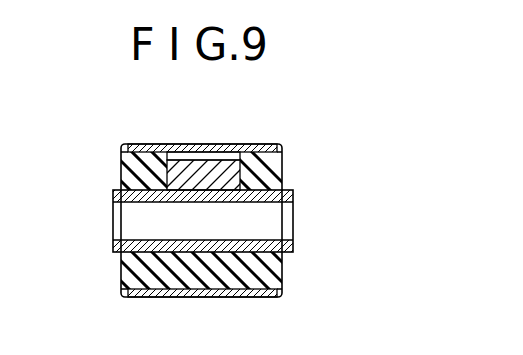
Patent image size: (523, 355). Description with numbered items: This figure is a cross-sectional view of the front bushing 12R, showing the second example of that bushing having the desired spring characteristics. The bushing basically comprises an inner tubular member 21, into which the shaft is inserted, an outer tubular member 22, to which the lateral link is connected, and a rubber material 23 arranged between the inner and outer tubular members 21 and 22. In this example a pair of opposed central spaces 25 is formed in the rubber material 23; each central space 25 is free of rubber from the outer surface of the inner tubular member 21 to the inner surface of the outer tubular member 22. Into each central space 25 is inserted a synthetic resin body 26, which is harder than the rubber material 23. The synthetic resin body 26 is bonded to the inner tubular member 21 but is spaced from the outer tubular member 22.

The front bushing 12R is at (268, 129).
The inner tubular member 21 is at (293, 245).
The outer tubular member 22 is at (242, 297).
The rubber material 23 is at (284, 280).
The central space 25 is at (192, 156).
The synthetic resin body 26 is at (218, 166).